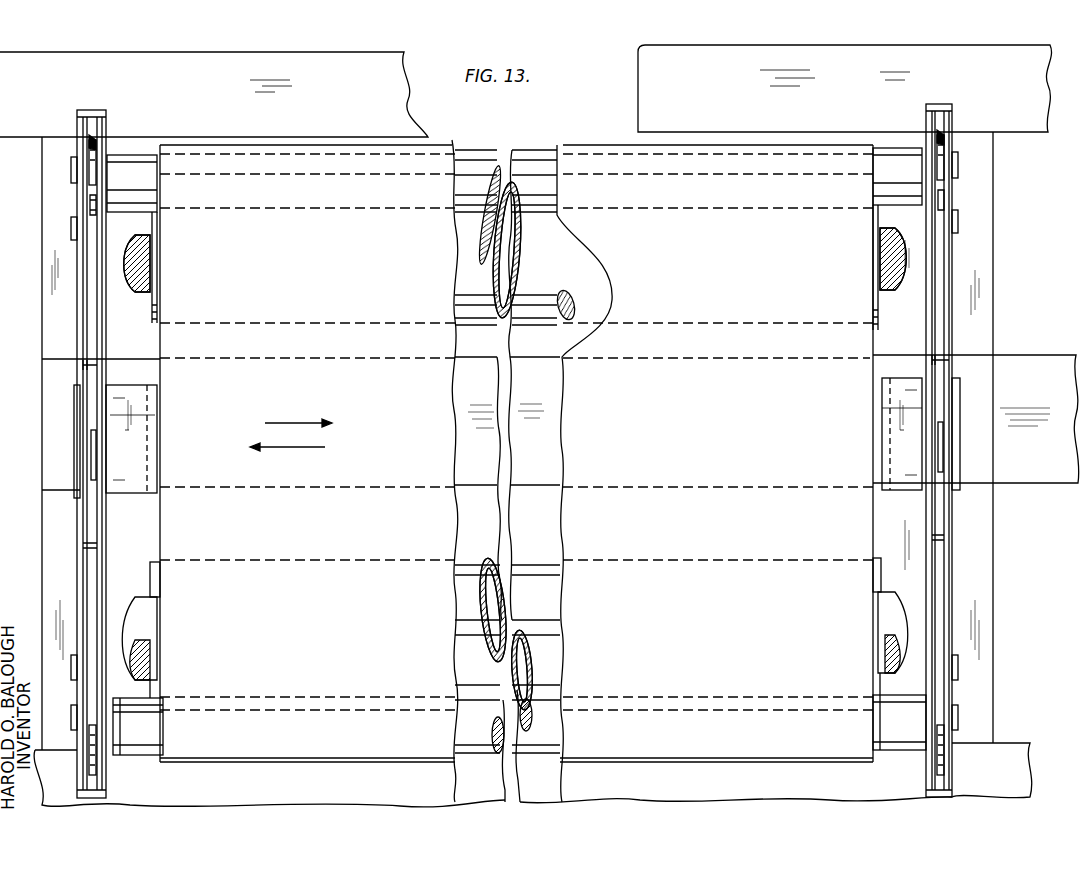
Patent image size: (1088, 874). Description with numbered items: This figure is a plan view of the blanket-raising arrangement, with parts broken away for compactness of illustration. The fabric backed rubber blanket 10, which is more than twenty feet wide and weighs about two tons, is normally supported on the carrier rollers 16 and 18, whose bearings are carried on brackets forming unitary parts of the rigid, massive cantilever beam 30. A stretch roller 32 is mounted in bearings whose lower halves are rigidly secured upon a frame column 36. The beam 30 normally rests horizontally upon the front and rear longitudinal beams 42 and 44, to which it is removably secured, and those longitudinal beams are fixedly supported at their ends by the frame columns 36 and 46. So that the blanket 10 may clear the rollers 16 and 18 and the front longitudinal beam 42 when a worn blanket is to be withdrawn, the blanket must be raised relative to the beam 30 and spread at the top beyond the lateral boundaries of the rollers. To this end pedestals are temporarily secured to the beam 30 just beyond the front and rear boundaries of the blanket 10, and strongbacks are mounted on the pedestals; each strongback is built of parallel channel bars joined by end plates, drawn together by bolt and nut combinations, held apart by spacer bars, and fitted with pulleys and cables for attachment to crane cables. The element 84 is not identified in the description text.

The blanket 10 is at (328, 284).
The carrier roller 16 is at (478, 320).
The carrier roller 18 is at (537, 568).
The beam 30 is at (548, 461).
The stretch roller 32 is at (577, 320).
The frame column 36 is at (390, 52).
The front longitudinal beam 42 is at (42, 523).
The rear longitudinal beam 44 is at (1000, 585).
The frame column 46 is at (1028, 783).
The roller bracket 84 is at (138, 731).